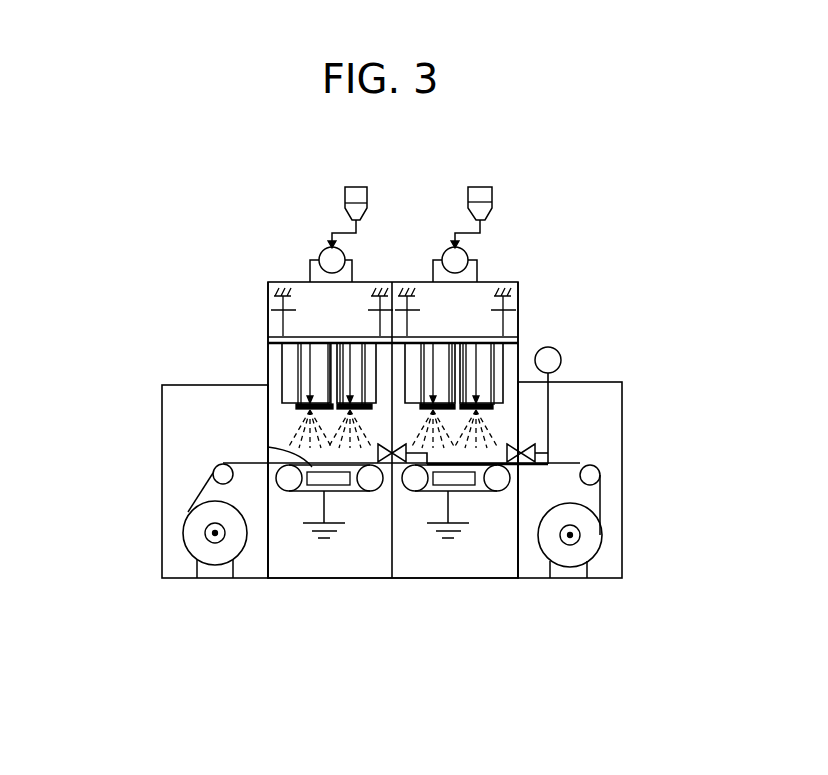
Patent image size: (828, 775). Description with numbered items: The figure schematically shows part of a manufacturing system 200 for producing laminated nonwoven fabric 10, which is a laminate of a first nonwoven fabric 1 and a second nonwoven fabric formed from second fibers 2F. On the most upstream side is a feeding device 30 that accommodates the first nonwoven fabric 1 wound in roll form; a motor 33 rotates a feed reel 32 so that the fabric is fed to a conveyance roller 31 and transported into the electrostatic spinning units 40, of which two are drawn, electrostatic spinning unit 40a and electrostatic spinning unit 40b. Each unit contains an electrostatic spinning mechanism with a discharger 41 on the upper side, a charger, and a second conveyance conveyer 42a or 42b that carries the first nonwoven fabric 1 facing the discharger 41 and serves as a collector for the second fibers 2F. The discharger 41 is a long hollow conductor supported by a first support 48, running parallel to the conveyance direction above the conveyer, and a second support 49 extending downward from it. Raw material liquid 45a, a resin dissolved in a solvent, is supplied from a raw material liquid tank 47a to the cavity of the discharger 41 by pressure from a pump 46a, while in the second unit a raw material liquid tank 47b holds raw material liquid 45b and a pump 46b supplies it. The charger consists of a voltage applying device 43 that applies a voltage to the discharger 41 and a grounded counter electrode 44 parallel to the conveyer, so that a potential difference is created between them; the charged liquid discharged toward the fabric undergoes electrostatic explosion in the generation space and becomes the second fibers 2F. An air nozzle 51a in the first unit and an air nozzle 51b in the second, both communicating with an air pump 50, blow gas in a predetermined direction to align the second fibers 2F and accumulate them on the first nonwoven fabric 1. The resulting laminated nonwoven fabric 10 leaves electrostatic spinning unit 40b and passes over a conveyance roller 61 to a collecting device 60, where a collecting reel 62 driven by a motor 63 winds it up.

The manufacturing system 200 is at (135, 230).
The first nonwoven fabric 1 is at (553, 463).
The second fibers 2F is at (424, 410).
The laminated nonwoven fabric 10 is at (198, 491).
The feeding device 30 is at (596, 513).
The conveyance roller 31 is at (600, 473).
The feed reel 32 is at (588, 540).
The motor 33 is at (613, 567).
The electrostatic spinning units 40 is at (506, 323).
The electrostatic spinning unit 40a is at (393, 589).
The electrostatic spinning unit 40b is at (268, 589).
The discharger 41 is at (305, 405).
The second conveyance conveyer 42a is at (417, 494).
The second conveyance conveyer 42b is at (292, 494).
The voltage applying device 43 is at (419, 430).
The counter electrode 44 is at (378, 449).
The raw material liquid 45a is at (482, 207).
The raw material liquid 45b is at (350, 207).
The pump 46a is at (469, 257).
The pump 46b is at (320, 256).
The raw material liquid tank 47a is at (513, 192).
The raw material liquid tank 47b is at (313, 186).
The first support 48 is at (273, 338).
The second support 49 is at (420, 364).
The air pump 50 is at (558, 347).
The air nozzle 51a is at (514, 462).
The air nozzle 51b is at (384, 462).
The collecting device 60 is at (186, 512).
The conveyance roller 61 is at (213, 470).
The collecting reel 62 is at (190, 540).
The motor 63 is at (168, 567).